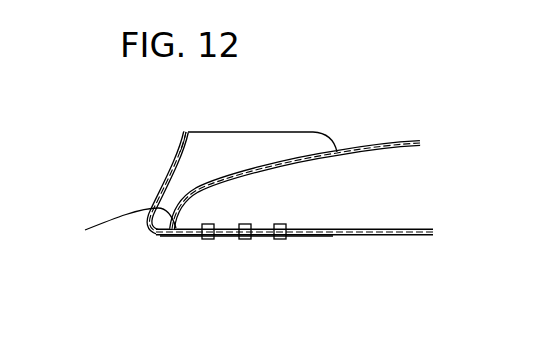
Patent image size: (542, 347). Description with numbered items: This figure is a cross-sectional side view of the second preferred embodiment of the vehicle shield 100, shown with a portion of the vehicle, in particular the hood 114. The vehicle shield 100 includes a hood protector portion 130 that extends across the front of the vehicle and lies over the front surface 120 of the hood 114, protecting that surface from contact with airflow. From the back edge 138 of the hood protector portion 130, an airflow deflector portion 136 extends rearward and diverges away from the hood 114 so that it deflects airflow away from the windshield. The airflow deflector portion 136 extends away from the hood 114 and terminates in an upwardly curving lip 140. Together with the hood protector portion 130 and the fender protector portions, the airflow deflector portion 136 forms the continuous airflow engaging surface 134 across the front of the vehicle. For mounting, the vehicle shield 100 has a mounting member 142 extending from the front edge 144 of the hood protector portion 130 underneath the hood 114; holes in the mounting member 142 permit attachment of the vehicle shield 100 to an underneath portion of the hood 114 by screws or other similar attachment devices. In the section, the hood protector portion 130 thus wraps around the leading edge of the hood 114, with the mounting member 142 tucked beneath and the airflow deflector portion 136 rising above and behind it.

The vehicle shield 100 is at (103, 113).
The hood 114 is at (368, 149).
The front surface 120 is at (118, 234).
The hood protector portion 130 is at (147, 231).
The continuous airflow engaging surface 134 is at (148, 194).
The airflow deflector portion 136 is at (185, 138).
The back edge 138 is at (178, 150).
The upwardly curving lip 140 is at (187, 132).
The mounting member 142 is at (297, 237).
The front edge 144 is at (160, 233).